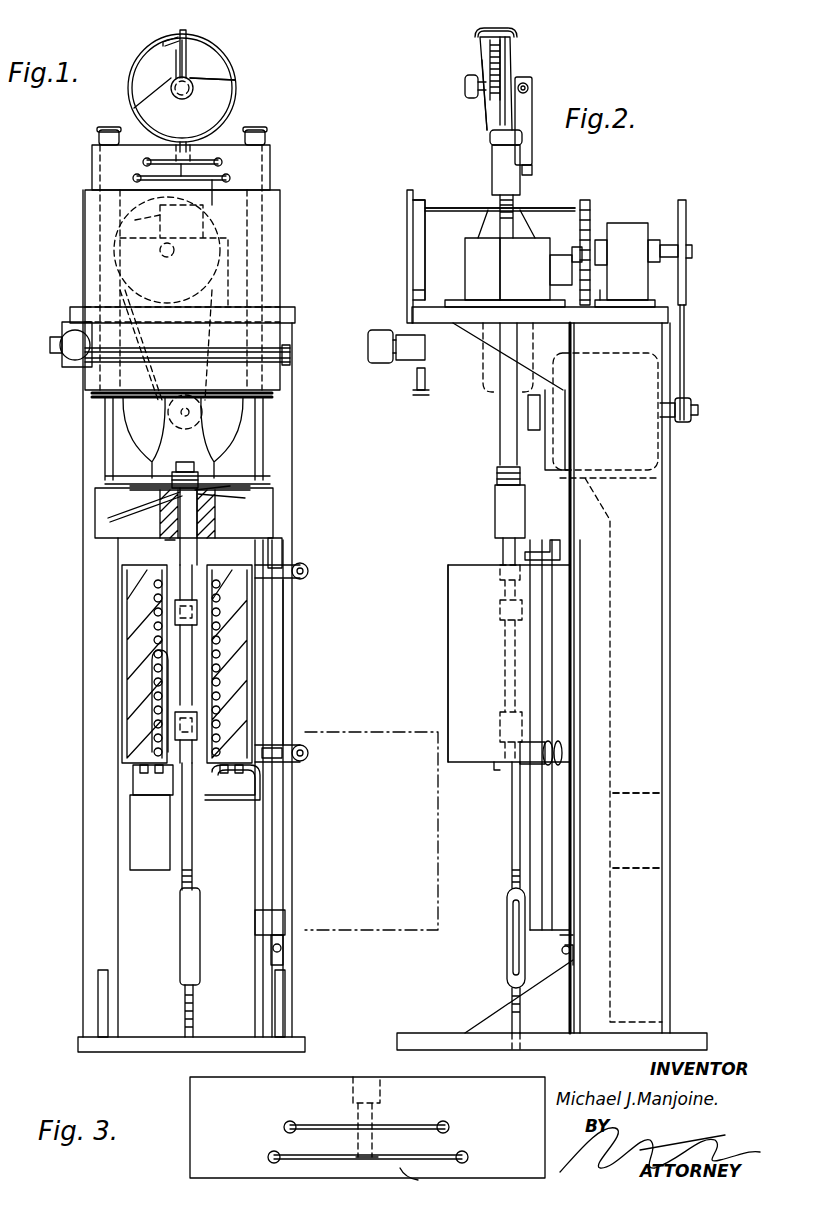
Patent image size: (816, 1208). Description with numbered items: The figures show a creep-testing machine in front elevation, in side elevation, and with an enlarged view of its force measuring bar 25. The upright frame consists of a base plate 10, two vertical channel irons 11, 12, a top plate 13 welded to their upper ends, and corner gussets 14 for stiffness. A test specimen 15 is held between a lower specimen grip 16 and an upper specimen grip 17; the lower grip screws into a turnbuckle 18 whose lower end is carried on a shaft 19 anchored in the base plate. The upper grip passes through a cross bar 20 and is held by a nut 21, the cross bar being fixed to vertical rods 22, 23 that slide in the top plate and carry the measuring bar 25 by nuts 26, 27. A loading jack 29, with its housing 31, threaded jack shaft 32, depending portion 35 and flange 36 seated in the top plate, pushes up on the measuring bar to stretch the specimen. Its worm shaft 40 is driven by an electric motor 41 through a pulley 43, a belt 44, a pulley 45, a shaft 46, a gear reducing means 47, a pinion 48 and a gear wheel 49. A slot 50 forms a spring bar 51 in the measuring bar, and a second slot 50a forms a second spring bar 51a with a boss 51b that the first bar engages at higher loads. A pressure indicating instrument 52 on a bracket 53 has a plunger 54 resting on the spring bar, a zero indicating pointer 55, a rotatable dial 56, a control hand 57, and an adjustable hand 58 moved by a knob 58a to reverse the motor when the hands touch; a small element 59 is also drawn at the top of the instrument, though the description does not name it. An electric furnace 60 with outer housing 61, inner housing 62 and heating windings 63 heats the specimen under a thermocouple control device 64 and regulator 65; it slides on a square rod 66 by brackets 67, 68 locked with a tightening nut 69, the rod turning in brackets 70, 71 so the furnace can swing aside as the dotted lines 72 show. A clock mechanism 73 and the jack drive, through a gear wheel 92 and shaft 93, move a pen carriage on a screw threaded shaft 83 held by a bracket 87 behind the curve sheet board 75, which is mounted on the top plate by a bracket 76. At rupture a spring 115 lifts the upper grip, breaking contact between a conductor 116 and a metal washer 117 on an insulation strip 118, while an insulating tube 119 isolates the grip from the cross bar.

In FIG. 1, the base plate 10 is at (300, 1040).
In FIG. 2, the base plate 10 is at (707, 1042).
In FIG. 1, the channel iron 11 is at (82, 637).
In FIG. 1, the channel iron 12 is at (293, 518).
In FIG. 2, the channel iron 12 is at (672, 695).
In FIG. 1, the top plate 13 is at (295, 312).
In FIG. 2, the top plate 13 is at (670, 313).
In FIG. 1, the gussets 14 is at (98, 985).
In FIG. 2, the gussets 14 is at (468, 338).
In FIG. 1, the test specimen 15 is at (192, 664).
In FIG. 2, the test specimen 15 is at (503, 660).
In FIG. 1, the lower specimen grip 16 is at (193, 848).
In FIG. 2, the lower specimen grip 16 is at (512, 830).
In FIG. 1, the upper specimen grip 17 is at (197, 548).
In FIG. 2, the upper specimen grip 17 is at (503, 550).
In FIG. 1, the turnbuckle 18 is at (200, 940).
In FIG. 2, the turnbuckle 18 is at (507, 948).
In FIG. 1, the shaft 19 is at (194, 1004).
In FIG. 2, the shaft 19 is at (512, 995).
In FIG. 1, the cross bar 20 is at (275, 492).
In FIG. 2, the cross bar 20 is at (495, 505).
In FIG. 1, the nut 21 is at (190, 459).
In FIG. 2, the nut 21 is at (495, 475).
In FIG. 1, the vertical rod 22 is at (103, 458).
In FIG. 1, the vertical rod 23 is at (268, 450).
In FIG. 2, the vertical rod 23 is at (500, 430).
In FIG. 1, the force measuring bar 25 is at (272, 157).
In FIG. 2, the force measuring bar 25 is at (492, 178).
In FIG. 3, the force measuring bar 25 is at (236, 1085).
In FIG. 1, the nut 26 is at (266, 136).
In FIG. 2, the nut 26 is at (490, 156).
In FIG. 1, the nut 27 is at (97, 138).
In FIG. 1, the loading jack 29 is at (205, 222).
In FIG. 2, the loading jack 29 is at (492, 266).
In FIG. 1, the housing 31 is at (147, 225).
In FIG. 2, the housing 31 is at (476, 238).
In FIG. 2, the jack shaft 32 is at (520, 202).
In FIG. 2, the depending portion 35 is at (486, 390).
In FIG. 2, the flange 36 is at (453, 323).
In FIG. 2, the worm shaft 40 is at (560, 258).
In FIG. 1, the electric motor 41 is at (235, 413).
In FIG. 2, the electric motor 41 is at (562, 470).
In FIG. 1, the pulley 43 is at (178, 422).
In FIG. 2, the pulley 43 is at (690, 400).
In FIG. 1, the belt 44 is at (150, 338).
In FIG. 2, the belt 44 is at (688, 355).
In FIG. 1, the pulley 45 is at (167, 298).
In FIG. 2, the pulley 45 is at (688, 214).
In FIG. 2, the shaft 46 is at (668, 244).
In FIG. 2, the gear reducing means 47 is at (618, 224).
In FIG. 2, the pinion 48 is at (575, 250).
In FIG. 2, the gear wheel 49 is at (600, 300).
In FIG. 1, the slot 50 is at (232, 179).
In FIG. 3, the slot 50 is at (268, 1157).
In FIG. 1, the second slot 50a is at (203, 166).
In FIG. 3, the second slot 50a is at (428, 1125).
In FIG. 1, the spring bar 51 is at (225, 200).
In FIG. 3, the spring bar 51 is at (418, 1180).
In FIG. 1, the second spring bar 51a is at (158, 166).
In FIG. 3, the second spring bar 51a is at (338, 1120).
In FIG. 1, the boss 51b is at (215, 178).
In FIG. 3, the boss 51b is at (378, 1155).
In FIG. 1, the pressure indicating instrument 52 is at (236, 105).
In FIG. 2, the pressure indicating instrument 52 is at (487, 140).
In FIG. 2, the bracket 53 is at (532, 102).
In FIG. 1, the plunger 54 is at (207, 150).
In FIG. 3, the plunger 54 is at (372, 1127).
In FIG. 1, the zero indicating pointer 55 is at (188, 30).
In FIG. 2, the zero indicating pointer 55 is at (476, 35).
In FIG. 1, the rotatable dial 56 is at (230, 72).
In FIG. 2, the rotatable dial 56 is at (507, 70).
In FIG. 1, the control hand 57 is at (178, 62).
In FIG. 2, the control hand 57 is at (506, 40).
In FIG. 1, the adjustable hand 58 is at (194, 60).
In FIG. 2, the adjustable hand 58 is at (483, 68).
In FIG. 1, the knob 58a is at (193, 96).
In FIG. 2, the knob 58a is at (465, 88).
In FIG. 1, the stop 59 is at (166, 40).
In FIG. 1, the electric furnace 60 is at (108, 665).
In FIG. 2, the electric furnace 60 is at (438, 631).
In FIG. 2, the outer housing 61 is at (447, 680).
In FIG. 1, the inner housing 62 is at (188, 780).
In FIG. 1, the heating windings 63 is at (160, 700).
In FIG. 1, the thermocouple control device 64 is at (150, 684).
In FIG. 1, the regulator 65 is at (155, 870).
In FIG. 2, the regulator 65 is at (665, 805).
In FIG. 1, the square rod 66 is at (285, 648).
In FIG. 1, the bracket 67 is at (297, 563).
In FIG. 1, the bracket 68 is at (291, 745).
In FIG. 1, the tightening nut 69 is at (292, 765).
In FIG. 1, the bracket 70 is at (283, 545).
In FIG. 2, the bracket 70 is at (548, 545).
In FIG. 1, the bracket 71 is at (285, 957).
In FIG. 2, the bracket 71 is at (555, 940).
In FIG. 1, the dotted lines 72 is at (342, 732).
In FIG. 1, the clock mechanism 73 is at (62, 335).
In FIG. 2, the clock mechanism 73 is at (368, 338).
In FIG. 1, the curve sheet board 75 is at (282, 229).
In FIG. 2, the curve sheet board 75 is at (405, 232).
In FIG. 2, the bracket 76 is at (440, 302).
In FIG. 2, the screw threaded shaft 83 is at (418, 250).
In FIG. 2, the bracket 87 is at (428, 382).
In FIG. 2, the gear wheel 92 is at (592, 198).
In FIG. 2, the shaft 93 is at (465, 205).
In FIG. 1, the spring 115 is at (223, 496).
In FIG. 1, the conductor 116 is at (145, 514).
In FIG. 1, the metal washer 117 is at (210, 508).
In FIG. 1, the insulation strip 118 is at (237, 506).
In FIG. 1, the insulating tube 119 is at (172, 540).